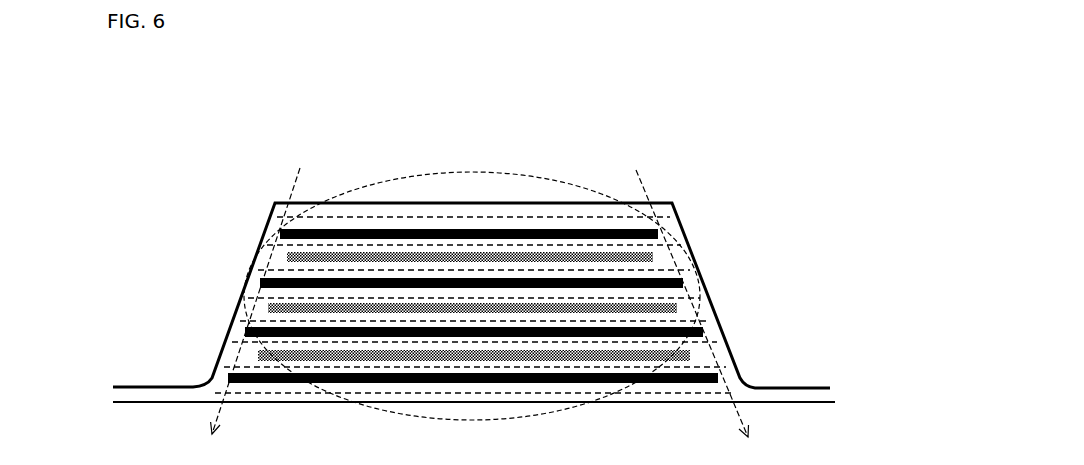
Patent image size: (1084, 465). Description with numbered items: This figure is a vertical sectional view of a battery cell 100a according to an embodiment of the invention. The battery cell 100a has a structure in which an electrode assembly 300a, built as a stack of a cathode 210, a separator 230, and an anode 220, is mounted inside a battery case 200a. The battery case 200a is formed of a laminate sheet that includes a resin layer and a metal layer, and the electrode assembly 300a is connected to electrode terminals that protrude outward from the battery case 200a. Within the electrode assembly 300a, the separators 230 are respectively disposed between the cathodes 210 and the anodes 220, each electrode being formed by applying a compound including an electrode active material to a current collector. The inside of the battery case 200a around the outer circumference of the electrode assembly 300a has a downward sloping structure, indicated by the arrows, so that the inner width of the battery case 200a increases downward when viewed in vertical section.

The battery cell 100a is at (234, 141).
The battery case 200a is at (672, 203).
The cathode 210 is at (723, 372).
The anode 220 is at (673, 304).
The separator 230 is at (653, 246).
The electrode assembly 300a is at (508, 173).